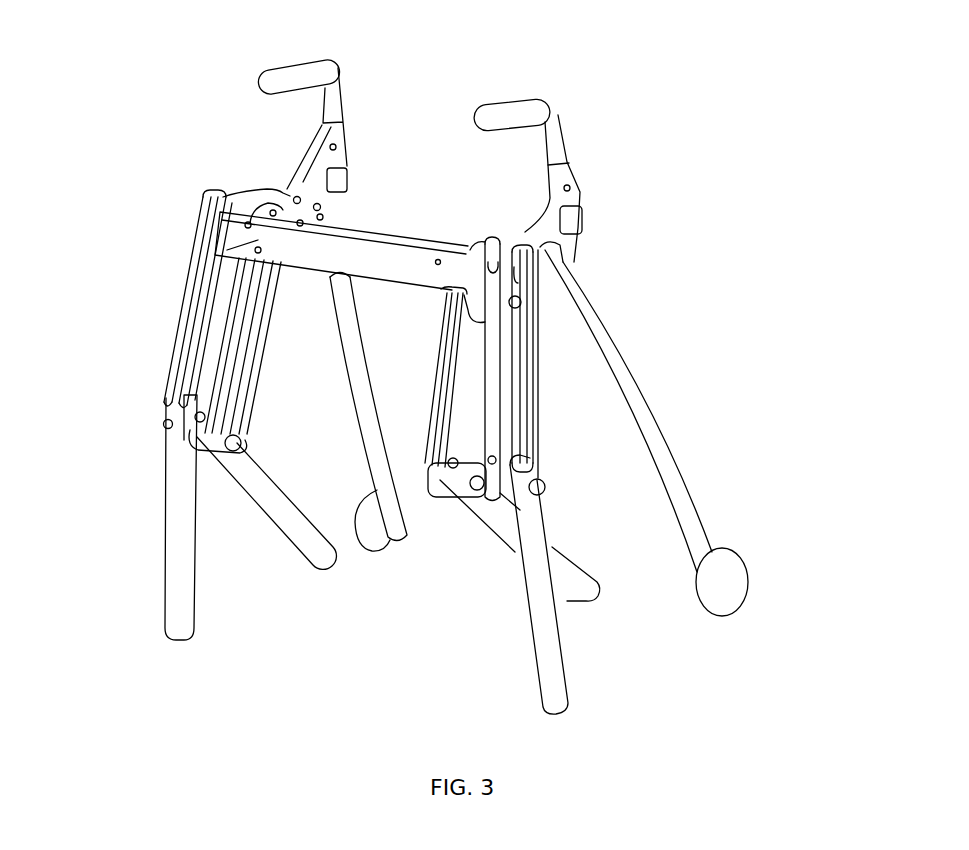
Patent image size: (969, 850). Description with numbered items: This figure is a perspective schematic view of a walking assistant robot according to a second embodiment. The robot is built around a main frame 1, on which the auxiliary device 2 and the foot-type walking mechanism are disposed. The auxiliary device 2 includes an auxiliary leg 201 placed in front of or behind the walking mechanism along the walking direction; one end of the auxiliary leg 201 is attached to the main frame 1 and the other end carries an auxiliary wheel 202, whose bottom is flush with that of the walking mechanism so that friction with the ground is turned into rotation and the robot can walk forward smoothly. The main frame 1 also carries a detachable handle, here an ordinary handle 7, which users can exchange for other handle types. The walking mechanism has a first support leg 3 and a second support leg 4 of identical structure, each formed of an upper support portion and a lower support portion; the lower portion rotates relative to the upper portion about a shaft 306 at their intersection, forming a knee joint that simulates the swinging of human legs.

The main frame 1 is at (225, 261).
The auxiliary device 2 is at (747, 353).
The first support leg 3 is at (543, 628).
The second support leg 4 is at (503, 518).
The ordinary handle 7 is at (568, 133).
The auxiliary leg 201 is at (597, 327).
The auxiliary wheel 202 is at (717, 575).
The shaft 306 is at (546, 487).